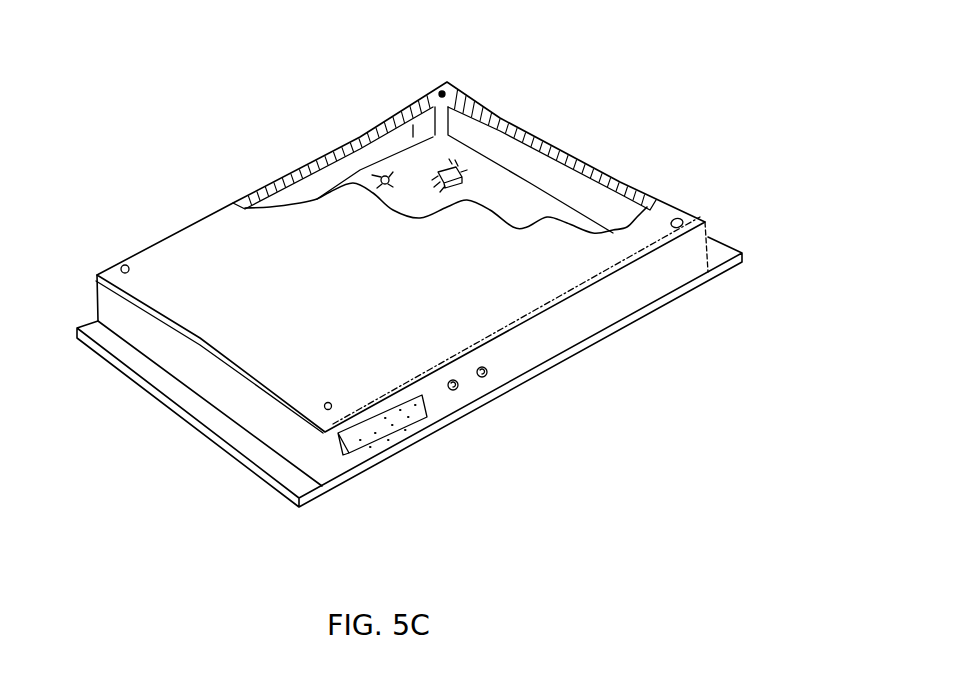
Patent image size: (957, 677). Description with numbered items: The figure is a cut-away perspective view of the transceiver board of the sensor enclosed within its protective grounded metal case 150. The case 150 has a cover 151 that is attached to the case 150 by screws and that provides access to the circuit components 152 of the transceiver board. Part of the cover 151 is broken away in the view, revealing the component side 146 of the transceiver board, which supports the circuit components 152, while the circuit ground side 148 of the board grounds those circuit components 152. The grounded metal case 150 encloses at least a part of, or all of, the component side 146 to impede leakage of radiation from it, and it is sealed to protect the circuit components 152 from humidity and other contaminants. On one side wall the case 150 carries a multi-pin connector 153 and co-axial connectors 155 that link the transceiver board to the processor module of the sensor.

The protective grounded metal case 150 is at (197, 243).
The cover 151 is at (517, 283).
The circuit components 152 is at (390, 172).
The component side 146 is at (513, 188).
The circuit ground side 148 is at (563, 200).
The multi-pin connector 153 is at (388, 440).
The co-axial connectors 155 is at (467, 388).